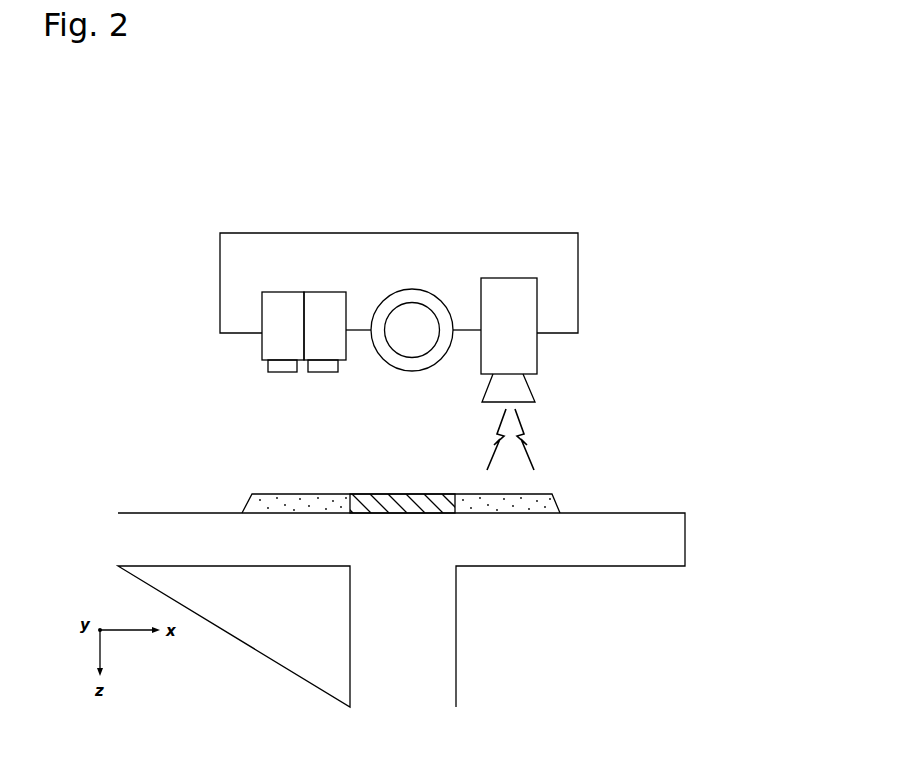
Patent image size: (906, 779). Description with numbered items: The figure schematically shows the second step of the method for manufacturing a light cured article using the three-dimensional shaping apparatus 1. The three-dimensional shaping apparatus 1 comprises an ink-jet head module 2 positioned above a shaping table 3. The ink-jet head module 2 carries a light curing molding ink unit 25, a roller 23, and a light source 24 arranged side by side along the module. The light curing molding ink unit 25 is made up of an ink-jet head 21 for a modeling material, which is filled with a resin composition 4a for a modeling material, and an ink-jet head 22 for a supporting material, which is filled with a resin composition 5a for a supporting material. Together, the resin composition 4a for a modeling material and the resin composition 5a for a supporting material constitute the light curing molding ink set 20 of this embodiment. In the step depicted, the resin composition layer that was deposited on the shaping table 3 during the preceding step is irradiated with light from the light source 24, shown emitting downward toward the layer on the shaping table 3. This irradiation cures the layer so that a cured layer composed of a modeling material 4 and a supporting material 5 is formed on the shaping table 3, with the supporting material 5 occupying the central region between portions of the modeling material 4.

The three-dimensional shaping apparatus 1 is at (160, 288).
The ink-jet head module 2 is at (578, 270).
The shaping table 3 is at (685, 538).
The modeling material 4 is at (507, 503).
The supporting material 5 is at (446, 497).
The resin composition for a modeling material 4a is at (278, 302).
The resin composition for a supporting material 5a is at (323, 302).
The light curing molding ink set 20 is at (347, 177).
The ink-jet head for a modeling material 21 is at (274, 322).
The ink-jet head for a supporting material 22 is at (313, 337).
The roller 23 is at (425, 302).
The light source 24 is at (530, 362).
The light curing molding ink unit 25 is at (132, 314).